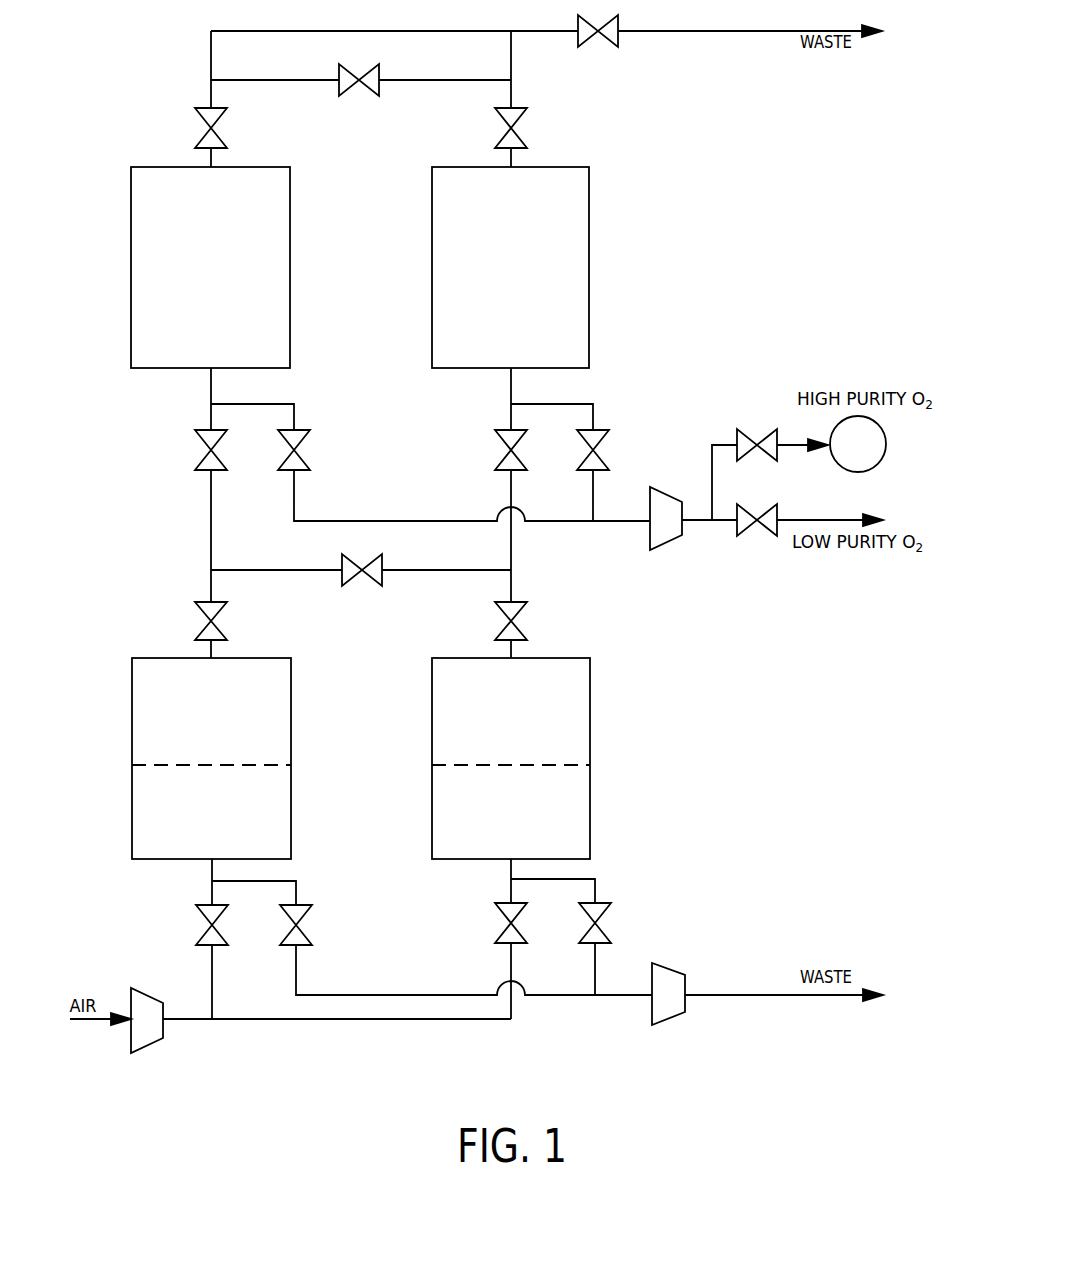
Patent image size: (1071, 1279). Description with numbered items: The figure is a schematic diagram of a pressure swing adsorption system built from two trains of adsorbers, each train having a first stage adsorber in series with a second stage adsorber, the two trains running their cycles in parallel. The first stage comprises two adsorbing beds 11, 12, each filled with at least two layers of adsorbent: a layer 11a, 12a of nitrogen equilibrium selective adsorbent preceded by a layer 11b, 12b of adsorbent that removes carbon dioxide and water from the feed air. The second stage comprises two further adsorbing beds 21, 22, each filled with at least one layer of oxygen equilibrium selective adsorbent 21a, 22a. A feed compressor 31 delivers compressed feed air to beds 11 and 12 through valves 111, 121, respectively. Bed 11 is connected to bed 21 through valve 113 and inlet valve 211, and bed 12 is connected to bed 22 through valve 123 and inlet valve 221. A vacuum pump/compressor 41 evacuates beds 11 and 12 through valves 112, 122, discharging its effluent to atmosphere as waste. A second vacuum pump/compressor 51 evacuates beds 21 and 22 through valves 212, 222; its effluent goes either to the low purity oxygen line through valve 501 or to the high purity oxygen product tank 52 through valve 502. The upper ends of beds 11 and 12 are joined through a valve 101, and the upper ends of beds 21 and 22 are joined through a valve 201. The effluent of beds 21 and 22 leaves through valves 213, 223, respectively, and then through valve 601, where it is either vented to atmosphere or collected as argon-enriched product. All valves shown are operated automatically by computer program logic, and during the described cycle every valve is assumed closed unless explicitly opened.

The first stage adsorbing bed 11 is at (168, 752).
The nitrogen equilibrium selective adsorbent layer 11a is at (142, 735).
The carbon dioxide and water removing adsorbent layer 11b is at (142, 810).
The first stage adsorbing bed 12 is at (467, 751).
The nitrogen equilibrium selective adsorbent layer 12a is at (442, 733).
The carbon dioxide and water removing adsorbent layer 12b is at (442, 808).
The second stage adsorbing bed 21 is at (166, 267).
The oxygen equilibrium selective adsorbent layer 21a is at (140, 318).
The second stage adsorbing bed 22 is at (467, 267).
The oxygen equilibrium selective adsorbent layer 22a is at (440, 318).
The feed compressor 31 is at (198, 1033).
The vacuum pump/compressor 41 is at (662, 1018).
The vacuum pump/compressor 51 is at (662, 541).
The high purity oxygen product tank 52 is at (858, 444).
The valve 101 is at (362, 581).
The valve 111 is at (198, 925).
The valve 112 is at (311, 925).
The valve 113 is at (226, 621).
The valve 121 is at (497, 923).
The valve 122 is at (611, 923).
The valve 123 is at (526, 621).
The valve 201 is at (359, 87).
The inlet valve 211 is at (196, 450).
The valve 212 is at (309, 450).
The valve 213 is at (195, 128).
The inlet valve 221 is at (496, 450).
The valve 222 is at (609, 450).
The valve 223 is at (525, 128).
The valve 501 is at (757, 531).
The valve 502 is at (757, 434).
The valve 601 is at (598, 40).